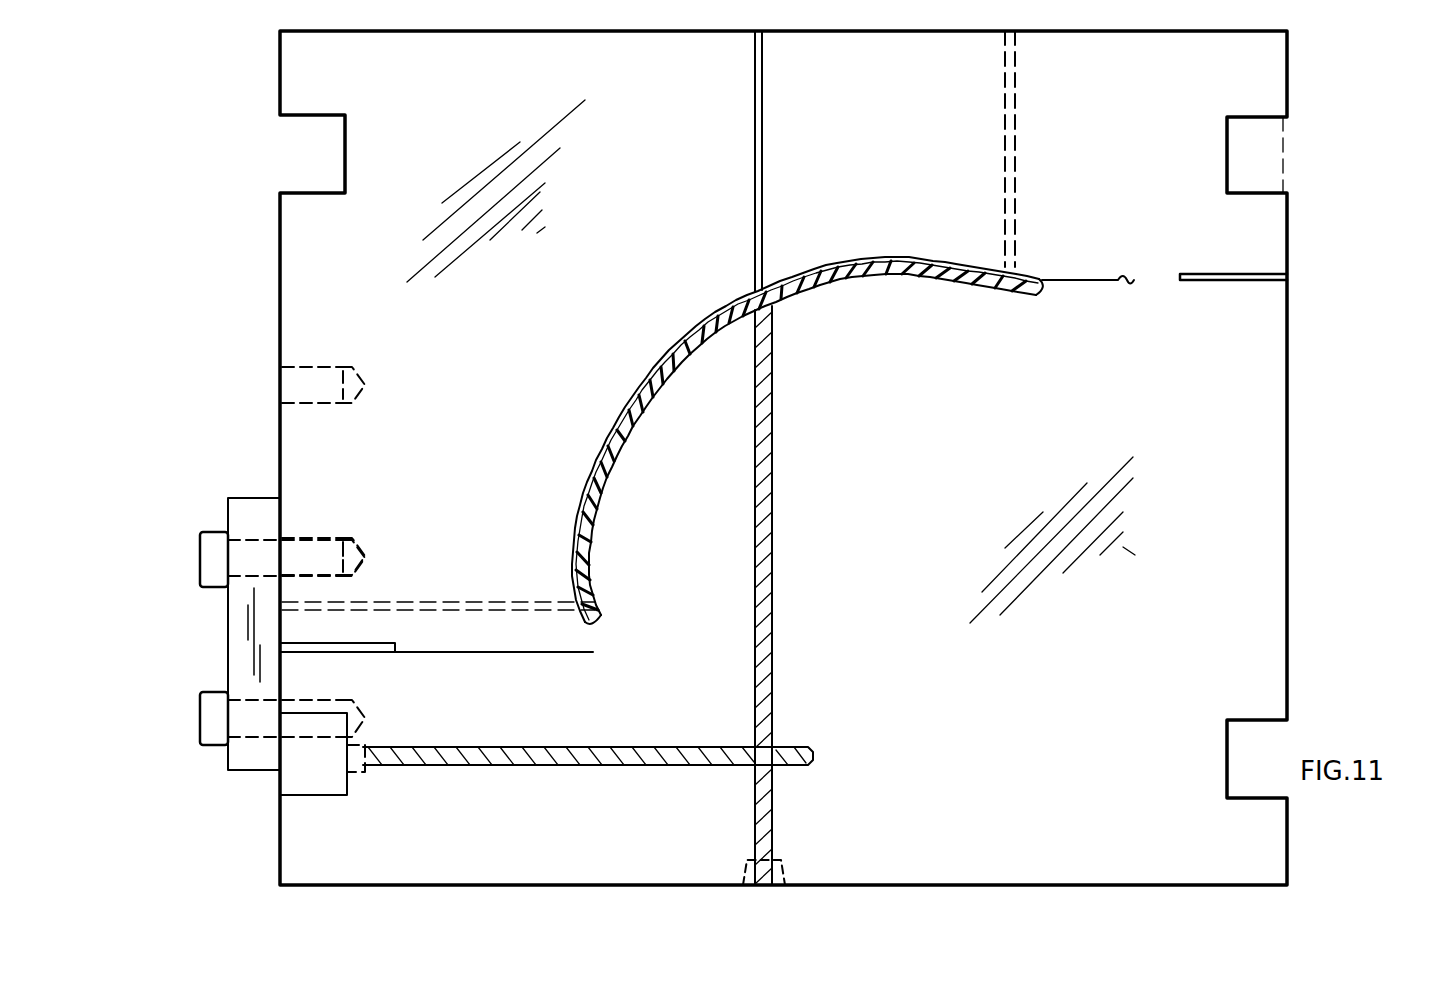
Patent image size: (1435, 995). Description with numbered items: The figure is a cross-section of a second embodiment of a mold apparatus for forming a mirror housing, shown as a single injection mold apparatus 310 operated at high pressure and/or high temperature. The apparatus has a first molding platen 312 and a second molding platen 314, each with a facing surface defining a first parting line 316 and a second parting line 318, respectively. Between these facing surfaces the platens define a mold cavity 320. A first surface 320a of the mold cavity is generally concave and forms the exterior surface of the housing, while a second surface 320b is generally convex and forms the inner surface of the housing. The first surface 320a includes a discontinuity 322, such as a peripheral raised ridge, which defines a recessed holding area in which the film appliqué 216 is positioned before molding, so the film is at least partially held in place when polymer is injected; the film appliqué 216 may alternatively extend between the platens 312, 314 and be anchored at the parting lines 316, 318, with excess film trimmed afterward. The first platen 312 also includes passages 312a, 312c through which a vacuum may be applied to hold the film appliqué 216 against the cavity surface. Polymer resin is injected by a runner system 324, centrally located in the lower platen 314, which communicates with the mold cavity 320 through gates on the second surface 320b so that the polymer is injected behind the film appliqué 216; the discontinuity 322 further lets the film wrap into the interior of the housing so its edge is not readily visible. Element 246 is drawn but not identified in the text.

The injection mold apparatus 310 is at (238, 177).
The first molding platen 312 is at (305, 287).
The passage 312a is at (762, 160).
The passage 312c is at (1015, 128).
The second molding platen 314 is at (315, 835).
The first parting line 316 is at (1140, 278).
The second parting line 318 is at (1178, 283).
The mold cavity 320 is at (1037, 252).
The first surface of mold cavity 320a is at (950, 268).
The second surface of mold cavity 320b is at (918, 286).
The discontinuity 322 is at (1055, 267).
The runner system 324 is at (780, 644).
The film appliqué 216 is at (749, 410).
The inner surface of strip 246 is at (610, 482).